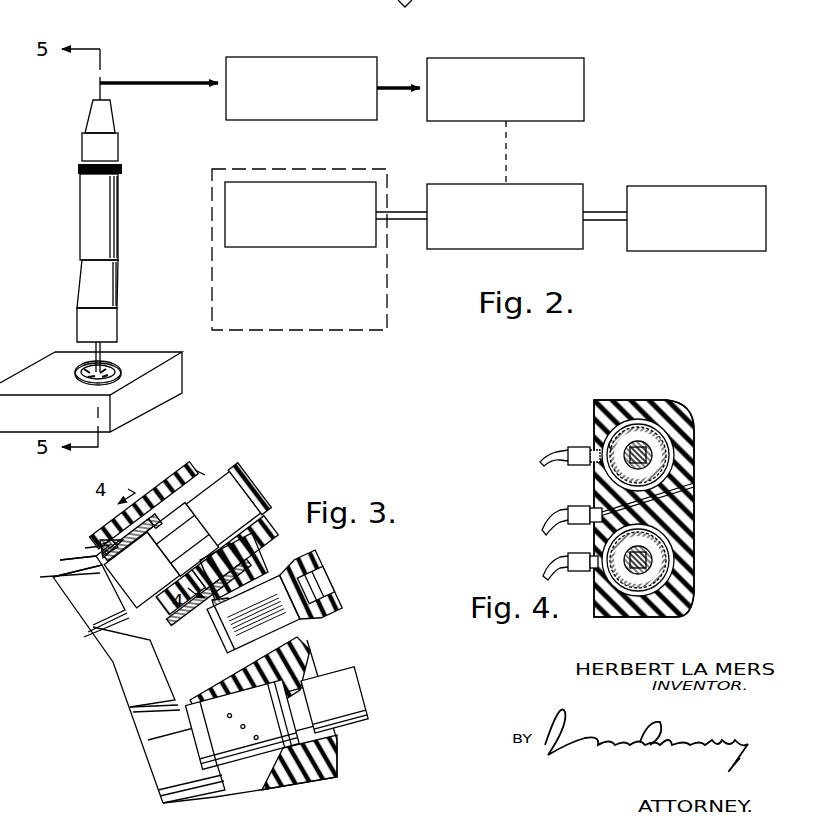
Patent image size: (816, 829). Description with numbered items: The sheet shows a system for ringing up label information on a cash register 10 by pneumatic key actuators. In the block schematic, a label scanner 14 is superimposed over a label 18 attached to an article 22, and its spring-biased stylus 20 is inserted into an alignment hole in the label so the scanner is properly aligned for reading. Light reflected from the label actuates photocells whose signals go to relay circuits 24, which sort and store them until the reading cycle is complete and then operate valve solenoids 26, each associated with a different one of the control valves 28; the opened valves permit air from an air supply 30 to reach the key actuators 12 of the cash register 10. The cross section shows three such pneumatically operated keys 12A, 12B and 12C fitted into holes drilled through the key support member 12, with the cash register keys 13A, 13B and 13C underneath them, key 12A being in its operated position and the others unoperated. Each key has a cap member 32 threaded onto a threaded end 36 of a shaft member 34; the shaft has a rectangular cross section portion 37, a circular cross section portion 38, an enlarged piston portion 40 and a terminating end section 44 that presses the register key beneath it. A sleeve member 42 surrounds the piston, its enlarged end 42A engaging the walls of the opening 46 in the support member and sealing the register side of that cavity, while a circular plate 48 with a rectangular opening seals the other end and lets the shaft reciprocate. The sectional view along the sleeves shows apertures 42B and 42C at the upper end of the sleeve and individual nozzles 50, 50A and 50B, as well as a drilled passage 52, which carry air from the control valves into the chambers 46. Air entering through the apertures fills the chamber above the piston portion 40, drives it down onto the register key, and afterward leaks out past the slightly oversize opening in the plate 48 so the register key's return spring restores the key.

In FIG. 2, the cash register 10 is at (370, 333).
In FIG. 2, the key support member 12 is at (318, 182).
In FIG. 3, the key support member 12 is at (200, 473).
In FIG. 4, the key support member 12 is at (683, 410).
In FIG. 3, the pneumatically operated key 12A is at (194, 524).
In FIG. 3, the pneumatically operated key 12B is at (296, 624).
In FIG. 3, the pneumatically operated key 12C is at (362, 700).
In FIG. 3, the cash register key 13A is at (93, 628).
In FIG. 3, the cash register key 13B is at (127, 675).
In FIG. 3, the cash register key 13C is at (168, 752).
In FIG. 2, the label scanner 14 is at (86, 213).
In FIG. 2, the label 18 is at (117, 360).
In FIG. 2, the stylus 20 is at (90, 347).
In FIG. 2, the article 22 is at (182, 380).
In FIG. 2, the relay circuits 24 is at (283, 57).
In FIG. 2, the valve solenoids 26 is at (522, 58).
In FIG. 2, the control valves 28 is at (532, 184).
In FIG. 2, the air supply 30 is at (735, 186).
In FIG. 3, the cap member 32 is at (258, 482).
In FIG. 3, the shaft member 34 is at (245, 553).
In FIG. 3, the threaded end 36 is at (319, 607).
In FIG. 3, the rectangular cross section portion 37 is at (195, 508).
In FIG. 3, the circular cross section portion 38 is at (142, 570).
In FIG. 3, the piston portion 40 is at (98, 562).
In FIG. 3, the sleeve member 42 is at (102, 552).
In FIG. 4, the sleeve member 42 is at (634, 422).
In FIG. 3, the enlarged end 42A is at (108, 543).
In FIG. 4, the aperture 42B is at (612, 440).
In FIG. 4, the aperture 42C is at (600, 478).
In FIG. 3, the terminating end section 44 is at (53, 577).
In FIG. 3, the opening 46 is at (129, 515).
In FIG. 4, the opening 46 is at (672, 448).
In FIG. 3, the circular plate 48 is at (144, 497).
In FIG. 4, the tube 50 is at (560, 447).
In FIG. 4, the nozzle 50A is at (556, 515).
In FIG. 4, the nozzle 50B is at (556, 562).
In FIG. 4, the passage 52 is at (694, 502).